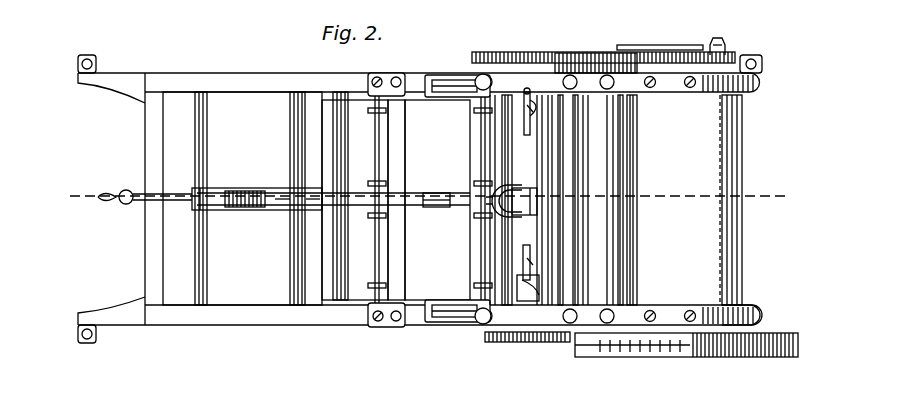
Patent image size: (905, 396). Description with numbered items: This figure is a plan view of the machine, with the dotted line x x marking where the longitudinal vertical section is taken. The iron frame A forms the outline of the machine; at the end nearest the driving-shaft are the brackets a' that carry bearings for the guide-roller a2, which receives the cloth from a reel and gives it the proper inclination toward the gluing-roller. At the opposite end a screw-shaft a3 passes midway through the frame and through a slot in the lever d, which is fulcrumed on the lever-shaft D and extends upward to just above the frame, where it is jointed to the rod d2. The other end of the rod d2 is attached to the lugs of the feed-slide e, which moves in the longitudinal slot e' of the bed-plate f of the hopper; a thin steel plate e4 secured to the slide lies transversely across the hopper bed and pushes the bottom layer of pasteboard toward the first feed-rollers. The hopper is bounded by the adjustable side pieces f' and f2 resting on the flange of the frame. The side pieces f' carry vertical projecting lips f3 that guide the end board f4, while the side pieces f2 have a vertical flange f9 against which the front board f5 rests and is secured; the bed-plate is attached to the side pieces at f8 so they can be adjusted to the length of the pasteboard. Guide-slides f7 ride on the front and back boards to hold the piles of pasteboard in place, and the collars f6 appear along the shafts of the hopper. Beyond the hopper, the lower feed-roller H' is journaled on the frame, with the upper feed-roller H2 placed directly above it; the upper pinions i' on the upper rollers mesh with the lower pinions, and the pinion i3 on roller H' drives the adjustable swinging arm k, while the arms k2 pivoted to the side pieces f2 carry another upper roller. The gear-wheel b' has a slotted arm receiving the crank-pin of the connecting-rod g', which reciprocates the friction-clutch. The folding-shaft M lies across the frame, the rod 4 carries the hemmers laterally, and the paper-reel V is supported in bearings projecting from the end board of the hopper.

The section line x x is at (418, 196).
The iron frame A is at (420, 199).
The brackets a' is at (747, 308).
The guide-roller a2 is at (297, 242).
The screw-shaft a3 is at (187, 210).
The lever-shaft D is at (204, 250).
The lever d is at (194, 191).
The rod d2 is at (268, 211).
The feed-slide e is at (396, 197).
The longitudinal slot e' is at (480, 201).
The steel plate e4 is at (396, 158).
The bed-plate f is at (396, 196).
The side pieces f' is at (386, 200).
The side pieces f2 is at (368, 108).
The vertical projecting lips f3 is at (368, 285).
The end board f4 is at (472, 100).
The front board f5 is at (481, 160).
The collar f6 is at (376, 165).
The guide-slides f7 is at (381, 283).
The bed-plate attachment f8 is at (476, 216).
The vertical flange f9 is at (482, 73).
The adjustable swinging arm k is at (526, 349).
The arms k2 is at (440, 80).
The rod 4 is at (523, 116).
The paper-reel V is at (527, 262).
The feed-roller H' is at (518, 200).
The folding-shaft M is at (575, 200).
The upper feed-roller H2 is at (632, 160).
The upper pinions i' is at (603, 48).
The connecting-rod g' is at (671, 42).
The pinion i3 is at (527, 347).
The gear-wheel b' is at (680, 347).